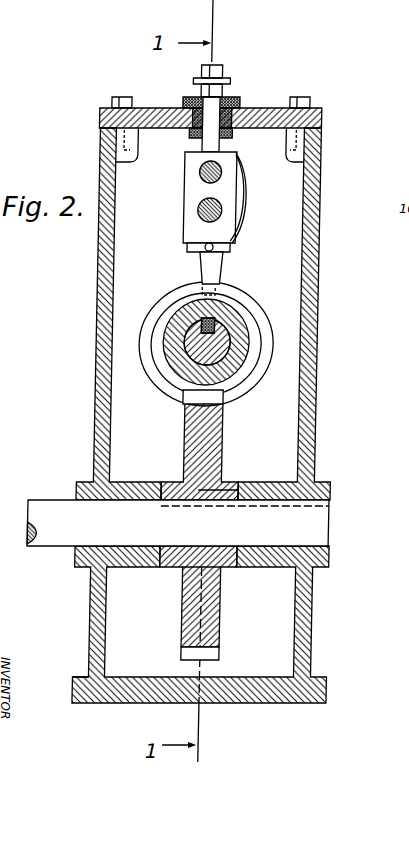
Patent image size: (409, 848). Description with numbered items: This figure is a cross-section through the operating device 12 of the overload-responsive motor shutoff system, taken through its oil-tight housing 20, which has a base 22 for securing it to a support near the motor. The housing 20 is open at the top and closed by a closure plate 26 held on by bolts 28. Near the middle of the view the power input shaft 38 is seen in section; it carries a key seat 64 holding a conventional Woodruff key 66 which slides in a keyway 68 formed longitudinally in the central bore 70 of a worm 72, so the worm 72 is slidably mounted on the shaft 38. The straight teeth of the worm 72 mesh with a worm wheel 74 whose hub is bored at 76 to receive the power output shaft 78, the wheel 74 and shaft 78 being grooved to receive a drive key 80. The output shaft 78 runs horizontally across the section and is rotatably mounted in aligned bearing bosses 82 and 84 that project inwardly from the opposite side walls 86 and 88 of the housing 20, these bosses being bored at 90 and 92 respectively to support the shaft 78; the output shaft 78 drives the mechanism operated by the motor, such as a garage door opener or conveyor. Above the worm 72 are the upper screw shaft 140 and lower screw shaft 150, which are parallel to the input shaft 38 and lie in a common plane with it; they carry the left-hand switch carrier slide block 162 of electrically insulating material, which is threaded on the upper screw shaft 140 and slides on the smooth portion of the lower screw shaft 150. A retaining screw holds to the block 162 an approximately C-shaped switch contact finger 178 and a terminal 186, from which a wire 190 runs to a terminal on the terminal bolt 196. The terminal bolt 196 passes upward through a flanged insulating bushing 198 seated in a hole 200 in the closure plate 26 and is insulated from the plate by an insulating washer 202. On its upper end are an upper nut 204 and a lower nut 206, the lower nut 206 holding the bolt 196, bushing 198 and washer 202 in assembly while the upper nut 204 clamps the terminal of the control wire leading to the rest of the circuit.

The operating device 12 is at (212, 281).
The housing 20 is at (321, 438).
The base 22 is at (318, 694).
The closure plate 26 is at (259, 108).
The bolts 28 is at (110, 97).
The power input shaft 38 is at (187, 357).
The key seat 64 is at (221, 331).
The Woodruff key 66 is at (218, 322).
The keyway 68 is at (208, 318).
The central bore 70 is at (222, 350).
The worm 72 is at (263, 365).
The worm wheel 74 is at (221, 601).
The hub bore 76 is at (180, 564).
The power output shaft 78 is at (59, 506).
The drive key 80 is at (232, 496).
The bearing boss 82 is at (147, 480).
The bearing boss 84 is at (272, 490).
The side wall 86 is at (96, 368).
The side wall 88 is at (315, 317).
The bore 90 is at (81, 546).
The bore 92 is at (333, 547).
The upper screw shaft 140 is at (195, 170).
The lower screw shaft 150 is at (194, 213).
The left-hand switch carrier slide block 162 is at (186, 189).
The switch contact finger 178 is at (191, 273).
The terminal 186 is at (197, 256).
The wire 190 is at (234, 198).
The terminal bolt 196 is at (212, 66).
The flanged insulating bushing 198 is at (240, 118).
The hole 200 is at (190, 132).
The insulating washer 202 is at (179, 101).
The upper nut 204 is at (222, 82).
The lower nut 206 is at (218, 94).